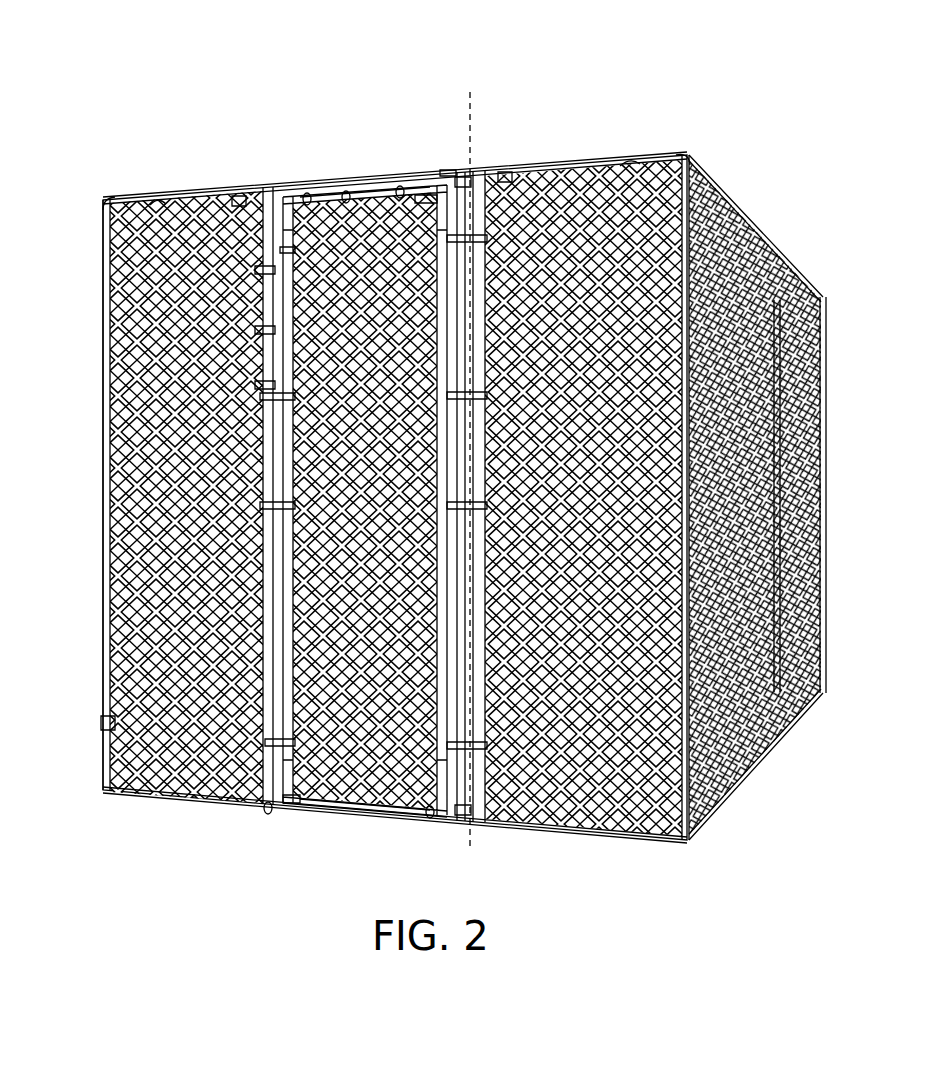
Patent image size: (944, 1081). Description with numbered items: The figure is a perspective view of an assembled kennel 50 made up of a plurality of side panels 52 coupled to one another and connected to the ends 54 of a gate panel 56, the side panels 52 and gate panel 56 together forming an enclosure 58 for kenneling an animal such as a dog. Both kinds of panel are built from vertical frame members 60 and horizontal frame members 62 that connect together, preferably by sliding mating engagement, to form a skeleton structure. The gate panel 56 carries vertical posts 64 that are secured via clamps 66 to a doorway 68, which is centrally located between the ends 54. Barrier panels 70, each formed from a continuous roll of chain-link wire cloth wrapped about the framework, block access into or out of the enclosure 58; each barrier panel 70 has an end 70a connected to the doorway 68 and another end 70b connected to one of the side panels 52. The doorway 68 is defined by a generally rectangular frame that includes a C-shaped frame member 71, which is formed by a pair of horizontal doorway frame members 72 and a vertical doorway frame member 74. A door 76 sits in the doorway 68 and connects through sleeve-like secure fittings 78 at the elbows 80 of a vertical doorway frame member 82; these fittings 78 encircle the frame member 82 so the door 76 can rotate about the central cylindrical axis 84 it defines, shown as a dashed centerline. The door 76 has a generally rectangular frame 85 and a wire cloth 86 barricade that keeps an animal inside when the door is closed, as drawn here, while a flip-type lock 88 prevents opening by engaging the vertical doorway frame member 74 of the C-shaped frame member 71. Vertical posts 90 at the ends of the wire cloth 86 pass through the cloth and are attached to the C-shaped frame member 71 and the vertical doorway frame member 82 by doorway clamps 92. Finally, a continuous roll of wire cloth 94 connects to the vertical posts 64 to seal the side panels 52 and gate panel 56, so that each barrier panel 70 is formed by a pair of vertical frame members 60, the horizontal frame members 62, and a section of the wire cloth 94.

The kennel 50 is at (165, 80).
The side panels 52 is at (190, 215).
The ends of the gate panel 54 is at (118, 195).
The gate panel 56 is at (545, 175).
The enclosure 58 is at (610, 842).
The vertical frame members 60 is at (823, 352).
The horizontal frame members 62 is at (226, 208).
The vertical posts 64 is at (268, 200).
The clamps 66 is at (292, 198).
The doorway 68 is at (355, 835).
The barrier panels 70 is at (160, 204).
The end of barrier panel 70a is at (238, 197).
The end of barrier panel 70b is at (103, 201).
The C-shaped frame member 71 is at (255, 270).
The horizontal doorway frame members 72 is at (362, 192).
The vertical doorway frame member 74 is at (255, 330).
The door 76 is at (382, 812).
The secure fittings 78 is at (455, 225).
The elbows 80 is at (462, 178).
The vertical doorway frame member 82 is at (440, 230).
The central cylindrical axis 84 is at (472, 100).
The rectangular frame 85 is at (315, 198).
The wire cloth 86 is at (320, 805).
The flip-type lock 88 is at (255, 385).
The vertical posts 90 is at (424, 197).
The doorway clamps 92 is at (346, 196).
The wire cloth 94 is at (108, 723).